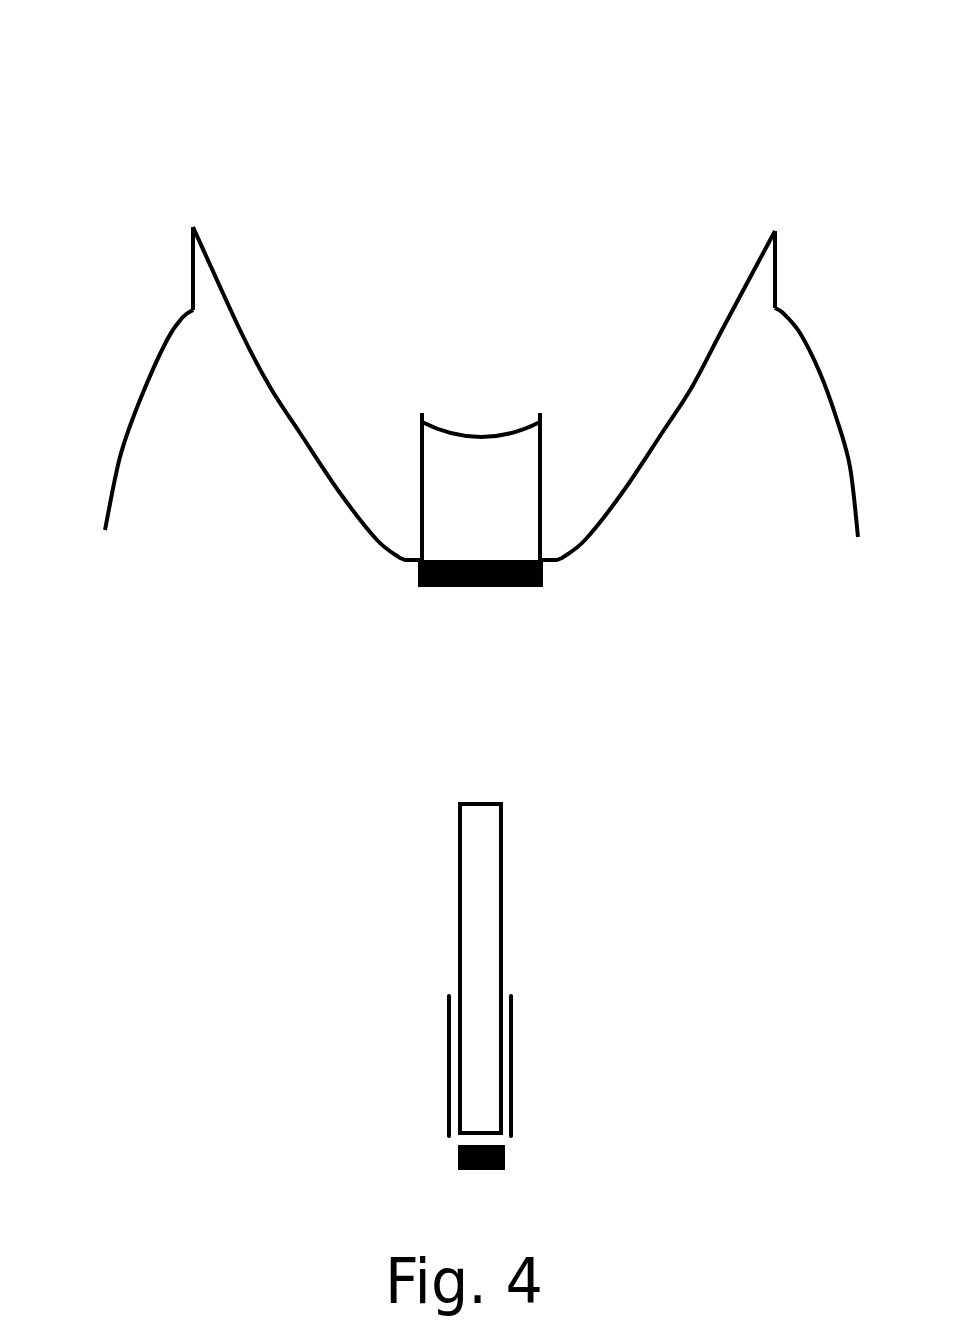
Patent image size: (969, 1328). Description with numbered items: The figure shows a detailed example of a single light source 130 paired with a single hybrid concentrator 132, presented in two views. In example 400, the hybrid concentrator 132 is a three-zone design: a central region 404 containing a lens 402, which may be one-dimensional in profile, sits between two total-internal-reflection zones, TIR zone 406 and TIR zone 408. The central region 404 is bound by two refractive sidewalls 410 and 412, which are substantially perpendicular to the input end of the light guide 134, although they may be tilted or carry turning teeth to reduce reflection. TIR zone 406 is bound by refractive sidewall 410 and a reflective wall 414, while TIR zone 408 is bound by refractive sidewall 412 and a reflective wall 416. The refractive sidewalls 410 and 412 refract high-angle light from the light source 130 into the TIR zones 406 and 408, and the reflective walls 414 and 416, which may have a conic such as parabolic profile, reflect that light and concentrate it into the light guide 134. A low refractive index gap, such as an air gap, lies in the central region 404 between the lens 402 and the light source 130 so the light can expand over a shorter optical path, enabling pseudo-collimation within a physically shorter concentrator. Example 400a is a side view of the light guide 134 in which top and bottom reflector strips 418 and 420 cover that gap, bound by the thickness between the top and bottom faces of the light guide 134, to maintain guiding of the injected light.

The example 400 is at (121, 35).
The example 400a is at (352, 760).
The light source 130 is at (478, 590).
The hybrid concentrator 132 is at (192, 225).
The light guide 134 is at (480, 801).
The lens 402 is at (497, 432).
The central region 404 is at (503, 496).
The TIR zone 406 is at (342, 372).
The TIR zone 408 is at (607, 372).
The refractive sidewall 410 is at (419, 488).
The refractive sidewall 412 is at (543, 484).
The reflective wall 414 is at (243, 333).
The reflective wall 416 is at (720, 332).
The top reflector strip 418 is at (447, 1015).
The bottom reflector strip 420 is at (513, 1015).